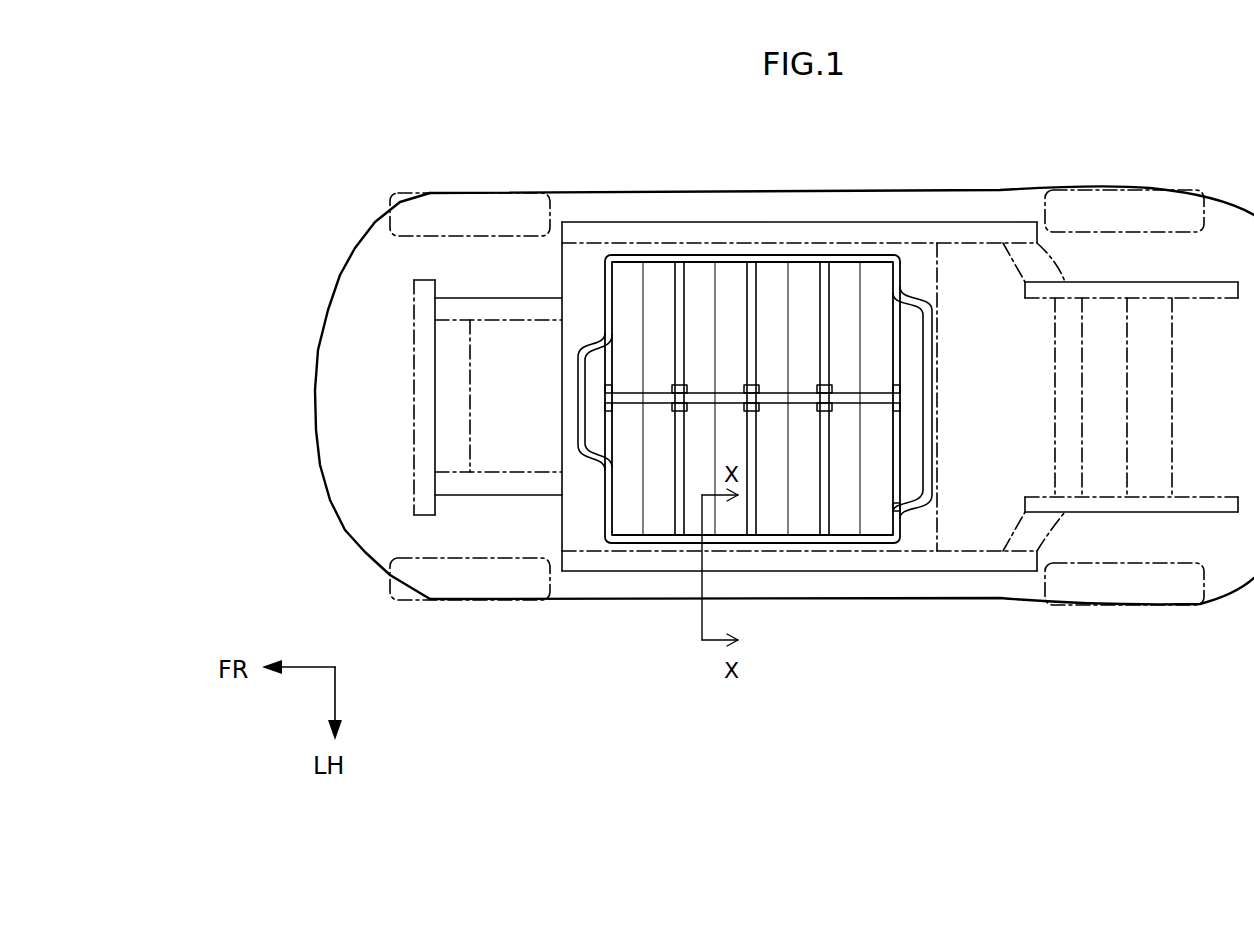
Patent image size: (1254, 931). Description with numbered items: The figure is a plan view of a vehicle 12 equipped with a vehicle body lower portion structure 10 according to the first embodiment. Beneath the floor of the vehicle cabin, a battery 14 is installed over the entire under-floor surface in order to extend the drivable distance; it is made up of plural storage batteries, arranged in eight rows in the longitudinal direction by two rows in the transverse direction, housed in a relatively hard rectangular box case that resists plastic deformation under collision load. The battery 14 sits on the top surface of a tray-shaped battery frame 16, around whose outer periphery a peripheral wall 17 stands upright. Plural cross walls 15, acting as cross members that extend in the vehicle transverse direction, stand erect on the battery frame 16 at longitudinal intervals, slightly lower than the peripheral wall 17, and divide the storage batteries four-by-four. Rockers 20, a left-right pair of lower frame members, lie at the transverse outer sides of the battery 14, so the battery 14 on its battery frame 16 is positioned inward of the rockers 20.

The vehicle body lower portion structure 10 is at (642, 622).
The vehicle 12 is at (880, 190).
The battery 14 is at (775, 280).
The cross walls 15 is at (681, 262).
The battery frame 16 is at (938, 470).
The peripheral wall 17 is at (930, 373).
The rockers 20 is at (820, 573).